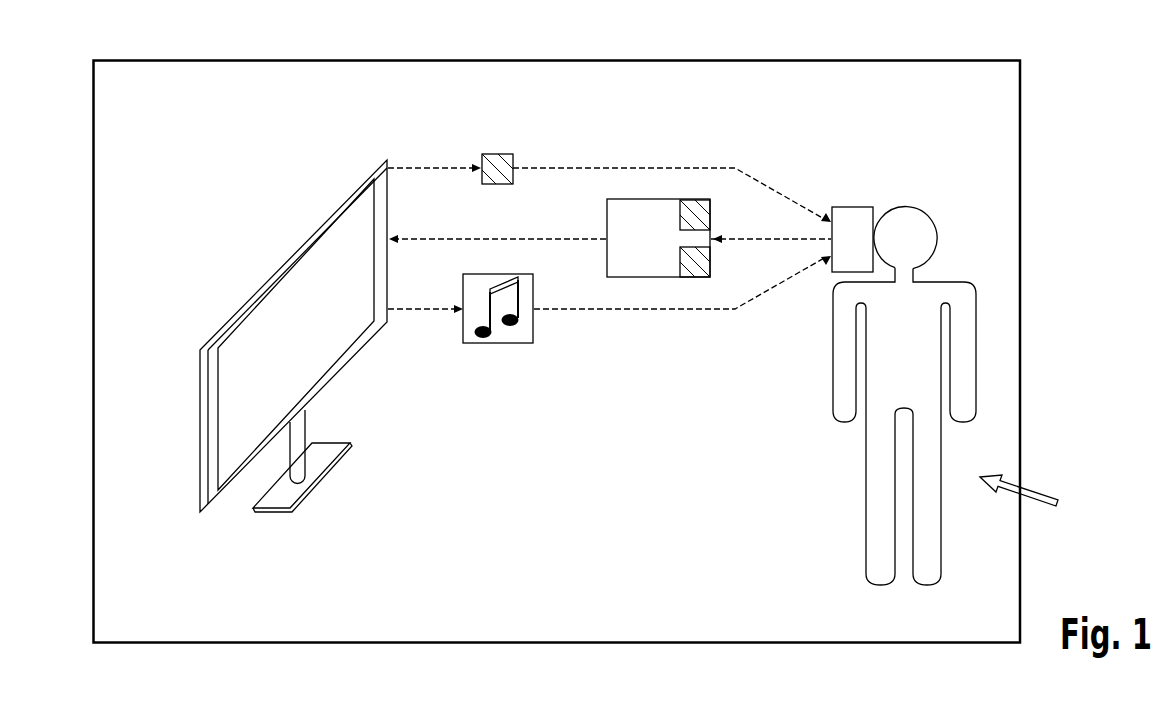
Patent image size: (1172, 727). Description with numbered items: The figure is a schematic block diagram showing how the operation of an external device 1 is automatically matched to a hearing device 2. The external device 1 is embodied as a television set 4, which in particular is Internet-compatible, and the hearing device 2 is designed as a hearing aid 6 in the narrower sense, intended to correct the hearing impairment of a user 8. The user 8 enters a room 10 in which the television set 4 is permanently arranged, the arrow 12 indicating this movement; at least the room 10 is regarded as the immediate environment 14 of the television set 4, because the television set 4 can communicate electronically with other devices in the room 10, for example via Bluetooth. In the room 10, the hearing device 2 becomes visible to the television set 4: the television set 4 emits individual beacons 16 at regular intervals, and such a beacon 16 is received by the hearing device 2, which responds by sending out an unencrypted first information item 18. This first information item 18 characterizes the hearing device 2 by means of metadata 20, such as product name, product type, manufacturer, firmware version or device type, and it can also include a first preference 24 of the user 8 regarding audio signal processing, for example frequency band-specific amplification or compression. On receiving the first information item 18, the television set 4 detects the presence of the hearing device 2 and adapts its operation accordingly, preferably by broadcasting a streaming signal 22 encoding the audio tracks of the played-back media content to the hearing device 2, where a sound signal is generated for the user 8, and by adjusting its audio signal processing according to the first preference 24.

The external device 1 is at (293, 336).
The television set 4 is at (230, 307).
The hearing device 2 is at (854, 199).
The hearing aid 6 is at (855, 207).
The user 8 is at (906, 206).
The room 10 is at (1021, 188).
The arrow 12 is at (1043, 497).
The immediate environment 14 is at (595, 350).
The beacon 16 is at (497, 153).
The first information item 18 is at (658, 242).
The metadata 20 is at (697, 199).
The streaming signal 22 is at (500, 345).
The first preference 24 is at (700, 278).